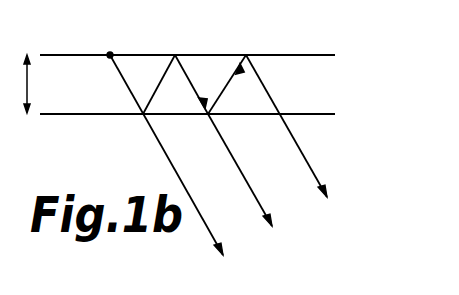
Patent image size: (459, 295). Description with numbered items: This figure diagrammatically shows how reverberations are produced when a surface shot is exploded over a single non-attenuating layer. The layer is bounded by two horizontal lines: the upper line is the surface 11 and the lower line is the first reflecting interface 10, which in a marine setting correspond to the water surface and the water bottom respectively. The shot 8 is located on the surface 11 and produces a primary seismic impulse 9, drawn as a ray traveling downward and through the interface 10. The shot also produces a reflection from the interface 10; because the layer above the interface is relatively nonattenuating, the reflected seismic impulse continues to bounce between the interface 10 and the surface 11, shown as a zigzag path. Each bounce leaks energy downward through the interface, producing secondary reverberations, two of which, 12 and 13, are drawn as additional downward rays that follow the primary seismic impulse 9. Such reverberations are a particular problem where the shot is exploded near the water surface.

The shot 8 is at (111, 54).
The primary seismic impulse 9 is at (182, 177).
The first reflecting interface 10 is at (297, 113).
The surface 11 is at (277, 55).
The secondary reverberation 12 is at (235, 158).
The secondary reverberation 13 is at (307, 158).